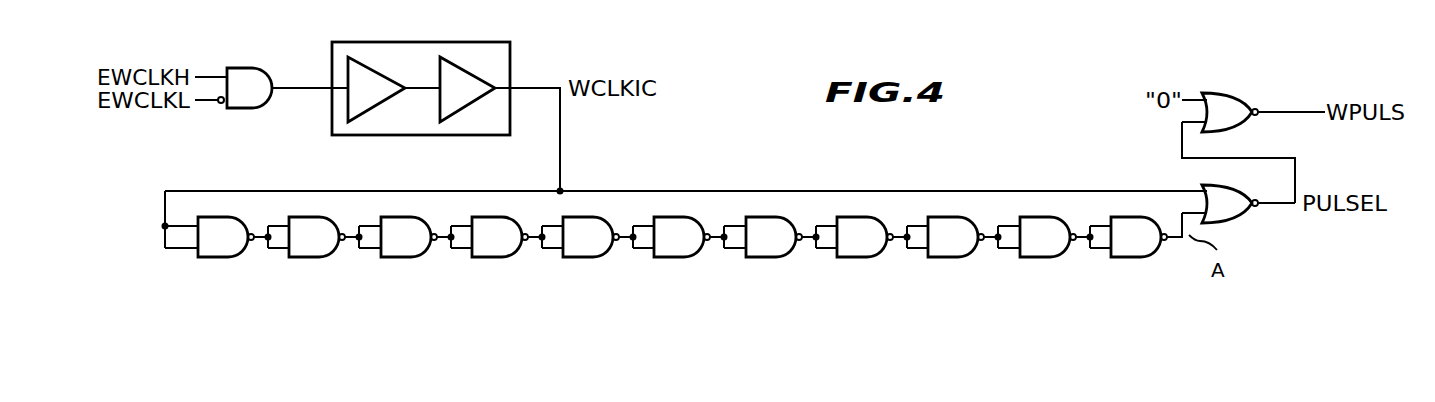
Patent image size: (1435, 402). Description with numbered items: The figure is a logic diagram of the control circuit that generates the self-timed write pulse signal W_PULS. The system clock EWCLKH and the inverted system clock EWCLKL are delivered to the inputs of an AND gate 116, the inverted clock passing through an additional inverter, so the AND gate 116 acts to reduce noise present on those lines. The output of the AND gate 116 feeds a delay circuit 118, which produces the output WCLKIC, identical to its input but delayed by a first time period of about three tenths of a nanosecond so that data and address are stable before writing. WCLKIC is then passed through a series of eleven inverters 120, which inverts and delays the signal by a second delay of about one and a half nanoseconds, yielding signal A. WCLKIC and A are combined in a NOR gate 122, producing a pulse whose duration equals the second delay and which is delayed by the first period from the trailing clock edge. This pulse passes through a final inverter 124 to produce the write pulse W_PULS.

The AND gate 116 is at (245, 68).
The delay circuit 118 is at (415, 42).
The series of eleven inverters 120 is at (304, 287).
The NOR gate 122 is at (1226, 189).
The final inverter 124 is at (1225, 97).